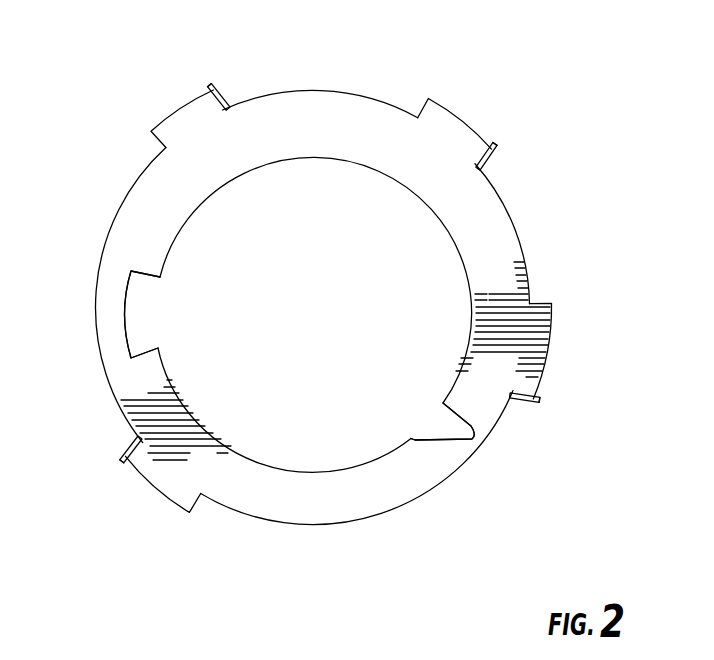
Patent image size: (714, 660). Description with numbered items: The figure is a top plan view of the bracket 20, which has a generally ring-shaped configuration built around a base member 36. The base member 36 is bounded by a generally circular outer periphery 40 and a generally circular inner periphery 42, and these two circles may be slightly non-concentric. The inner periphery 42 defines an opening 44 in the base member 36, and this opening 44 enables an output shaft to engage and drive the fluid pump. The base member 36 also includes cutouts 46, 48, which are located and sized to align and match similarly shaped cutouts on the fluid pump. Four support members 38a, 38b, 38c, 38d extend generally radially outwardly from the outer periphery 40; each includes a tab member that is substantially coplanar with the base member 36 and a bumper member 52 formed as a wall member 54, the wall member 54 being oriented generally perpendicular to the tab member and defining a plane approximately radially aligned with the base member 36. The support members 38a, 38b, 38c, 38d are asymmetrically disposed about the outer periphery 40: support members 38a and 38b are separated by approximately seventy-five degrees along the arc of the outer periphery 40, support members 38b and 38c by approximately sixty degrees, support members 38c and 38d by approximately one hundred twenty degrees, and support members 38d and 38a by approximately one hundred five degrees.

The bracket 20 is at (335, 304).
The base member 36 is at (510, 248).
The support member 38a is at (174, 108).
The support member 38b is at (463, 95).
The support member 38c is at (565, 310).
The support member 38d is at (190, 515).
The outer periphery 40 is at (403, 507).
The inner periphery 42 is at (322, 160).
The opening 44 is at (300, 387).
The cutout 46 is at (124, 318).
The cutout 48 is at (432, 439).
The bumper member 52 is at (230, 78).
The wall member 54 is at (234, 98).